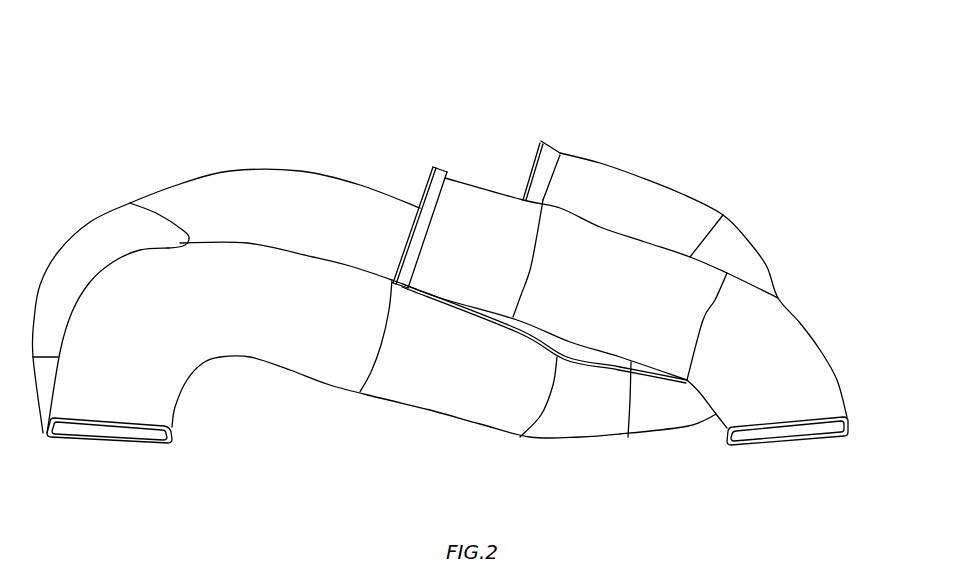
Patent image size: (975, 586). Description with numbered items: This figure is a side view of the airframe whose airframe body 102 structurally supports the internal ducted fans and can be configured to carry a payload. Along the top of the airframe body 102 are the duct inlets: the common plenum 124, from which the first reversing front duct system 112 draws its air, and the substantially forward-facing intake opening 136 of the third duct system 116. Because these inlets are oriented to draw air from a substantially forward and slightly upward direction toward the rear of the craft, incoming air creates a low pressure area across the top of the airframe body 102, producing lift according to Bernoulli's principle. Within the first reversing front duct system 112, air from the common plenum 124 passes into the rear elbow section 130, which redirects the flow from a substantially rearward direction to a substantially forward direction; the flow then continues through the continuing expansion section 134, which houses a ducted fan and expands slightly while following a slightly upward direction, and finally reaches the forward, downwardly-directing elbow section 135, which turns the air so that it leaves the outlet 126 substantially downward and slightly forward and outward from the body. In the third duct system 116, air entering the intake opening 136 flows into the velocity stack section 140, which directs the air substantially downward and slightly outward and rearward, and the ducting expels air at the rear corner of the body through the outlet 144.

The airframe body 102 is at (230, 167).
The first reversing front duct system 112 is at (470, 437).
The third duct system 116 is at (645, 238).
The common plenum 124 is at (545, 148).
The outlet 126 is at (104, 443).
The rear elbow section 130 is at (767, 267).
The continuing expansion section 134 is at (428, 387).
The forward, downwardly-directing elbow section 135 is at (252, 325).
The intake opening 136 is at (420, 178).
The velocity stack section 140 is at (637, 313).
The outlet 144 is at (793, 450).